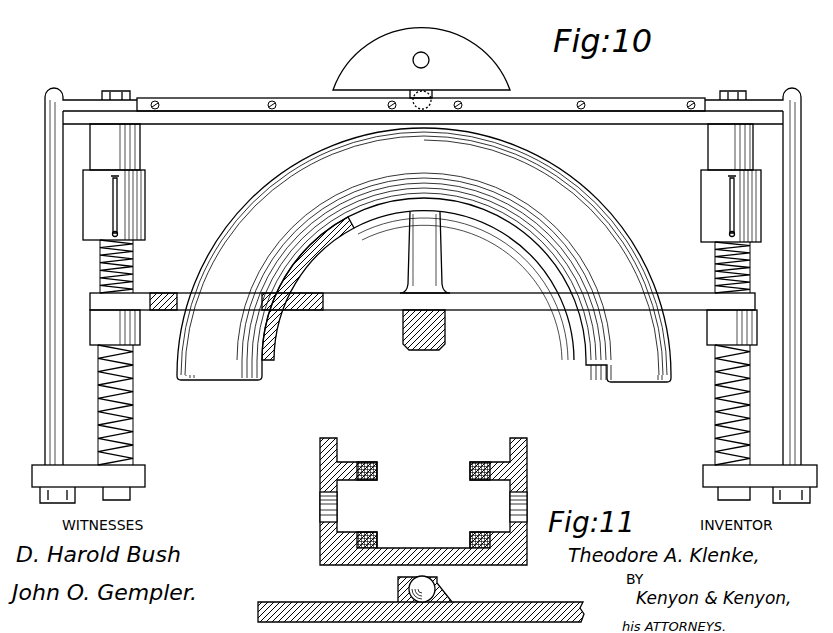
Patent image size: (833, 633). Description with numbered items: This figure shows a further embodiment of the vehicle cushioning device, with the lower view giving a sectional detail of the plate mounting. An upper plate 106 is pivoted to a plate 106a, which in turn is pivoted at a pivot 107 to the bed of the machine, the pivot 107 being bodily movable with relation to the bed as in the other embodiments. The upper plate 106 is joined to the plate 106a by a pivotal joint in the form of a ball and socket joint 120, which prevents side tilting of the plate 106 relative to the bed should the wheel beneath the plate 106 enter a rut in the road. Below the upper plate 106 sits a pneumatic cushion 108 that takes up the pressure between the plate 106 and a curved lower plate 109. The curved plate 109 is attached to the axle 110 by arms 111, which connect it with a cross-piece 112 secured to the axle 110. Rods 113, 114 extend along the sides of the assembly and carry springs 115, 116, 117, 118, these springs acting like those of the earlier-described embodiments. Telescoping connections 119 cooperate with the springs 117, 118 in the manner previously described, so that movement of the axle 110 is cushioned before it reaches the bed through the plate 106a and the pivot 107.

In FIG. 10, the upper plate 106 is at (234, 112).
In FIG. 11, the upper plate 106 is at (305, 610).
In FIG. 10, the plate 106a is at (446, 53).
In FIG. 11, the plate 106a is at (424, 495).
In FIG. 10, the pivot 107 is at (428, 57).
In FIG. 11, the pivot 107 is at (320, 500).
In FIG. 10, the pneumatic cushion 108 is at (283, 192).
In FIG. 10, the curved lower plate 109 is at (338, 242).
In FIG. 10, the axle 110 is at (440, 348).
In FIG. 10, the arms 111 is at (432, 272).
In FIG. 10, the cross-piece 112 is at (497, 305).
In FIG. 10, the rod 113 is at (56, 250).
In FIG. 10, the rod 114 is at (796, 252).
In FIG. 10, the spring 115 is at (712, 408).
In FIG. 10, the spring 116 is at (127, 410).
In FIG. 10, the spring 117 is at (130, 271).
In FIG. 10, the spring 118 is at (720, 268).
In FIG. 10, the telescoping connections 119 is at (143, 205).
In FIG. 10, the ball and socket joint 120 is at (410, 98).
In FIG. 11, the ball and socket joint 120 is at (407, 585).